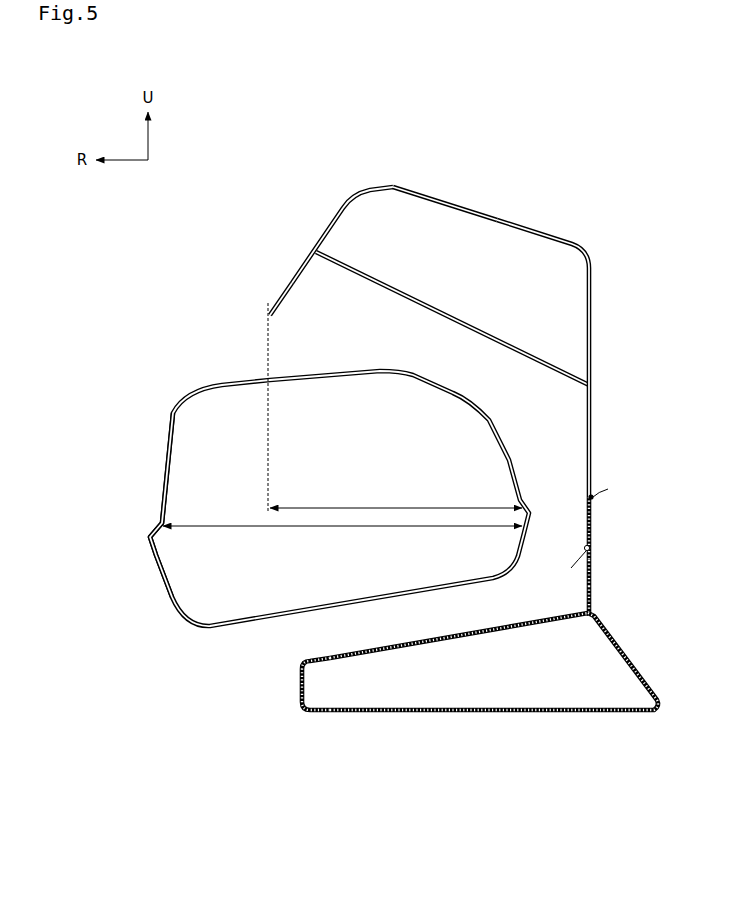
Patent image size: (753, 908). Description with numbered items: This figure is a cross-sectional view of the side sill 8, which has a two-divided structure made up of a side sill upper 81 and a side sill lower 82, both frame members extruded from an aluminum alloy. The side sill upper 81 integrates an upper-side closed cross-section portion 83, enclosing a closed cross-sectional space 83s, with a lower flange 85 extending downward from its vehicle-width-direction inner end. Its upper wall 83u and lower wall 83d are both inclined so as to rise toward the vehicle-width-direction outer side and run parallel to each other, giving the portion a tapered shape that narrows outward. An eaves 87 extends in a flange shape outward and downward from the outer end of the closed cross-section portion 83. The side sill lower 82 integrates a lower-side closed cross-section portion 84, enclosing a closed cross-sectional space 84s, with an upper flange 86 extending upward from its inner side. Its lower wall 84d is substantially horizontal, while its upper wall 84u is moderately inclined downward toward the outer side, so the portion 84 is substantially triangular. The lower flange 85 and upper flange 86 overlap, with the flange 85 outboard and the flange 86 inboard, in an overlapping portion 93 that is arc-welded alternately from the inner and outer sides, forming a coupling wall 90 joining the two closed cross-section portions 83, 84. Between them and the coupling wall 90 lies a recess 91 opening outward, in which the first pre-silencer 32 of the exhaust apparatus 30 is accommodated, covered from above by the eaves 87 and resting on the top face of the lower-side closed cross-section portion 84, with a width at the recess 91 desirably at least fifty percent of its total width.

The side sill 8 is at (462, 383).
The exhaust apparatus 30 is at (323, 486).
The first pre-silencer 32 is at (165, 456).
The side sill upper 81 is at (536, 226).
The side sill lower 82 is at (477, 716).
The upper-side closed cross-section portion 83 is at (417, 269).
The upper wall 83u is at (447, 202).
The closed cross-sectional space 83s is at (452, 318).
The lower wall 83d is at (486, 338).
The lower-side closed cross-section portion 84 is at (480, 694).
The upper wall 84u is at (372, 650).
The closed cross-sectional space 84s is at (459, 654).
The lower wall 84d is at (556, 715).
The lower flange 85 is at (592, 447).
The upper flange 86 is at (597, 584).
The eaves 87 is at (289, 286).
The coupling wall 90 is at (597, 461).
The recess 91 is at (330, 353).
The overlapping portion 93 is at (598, 524).